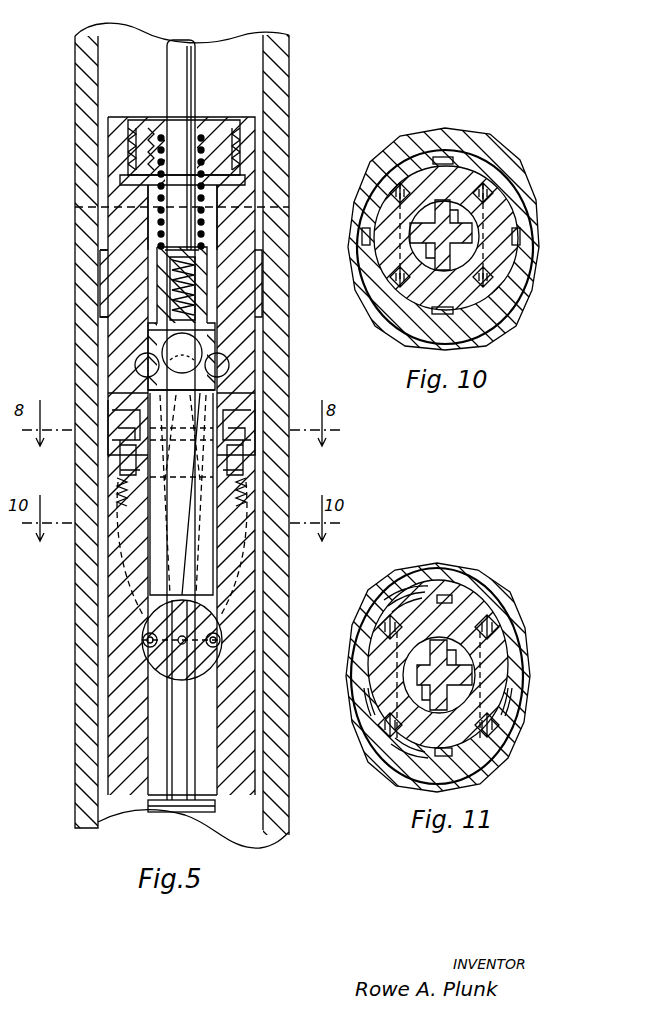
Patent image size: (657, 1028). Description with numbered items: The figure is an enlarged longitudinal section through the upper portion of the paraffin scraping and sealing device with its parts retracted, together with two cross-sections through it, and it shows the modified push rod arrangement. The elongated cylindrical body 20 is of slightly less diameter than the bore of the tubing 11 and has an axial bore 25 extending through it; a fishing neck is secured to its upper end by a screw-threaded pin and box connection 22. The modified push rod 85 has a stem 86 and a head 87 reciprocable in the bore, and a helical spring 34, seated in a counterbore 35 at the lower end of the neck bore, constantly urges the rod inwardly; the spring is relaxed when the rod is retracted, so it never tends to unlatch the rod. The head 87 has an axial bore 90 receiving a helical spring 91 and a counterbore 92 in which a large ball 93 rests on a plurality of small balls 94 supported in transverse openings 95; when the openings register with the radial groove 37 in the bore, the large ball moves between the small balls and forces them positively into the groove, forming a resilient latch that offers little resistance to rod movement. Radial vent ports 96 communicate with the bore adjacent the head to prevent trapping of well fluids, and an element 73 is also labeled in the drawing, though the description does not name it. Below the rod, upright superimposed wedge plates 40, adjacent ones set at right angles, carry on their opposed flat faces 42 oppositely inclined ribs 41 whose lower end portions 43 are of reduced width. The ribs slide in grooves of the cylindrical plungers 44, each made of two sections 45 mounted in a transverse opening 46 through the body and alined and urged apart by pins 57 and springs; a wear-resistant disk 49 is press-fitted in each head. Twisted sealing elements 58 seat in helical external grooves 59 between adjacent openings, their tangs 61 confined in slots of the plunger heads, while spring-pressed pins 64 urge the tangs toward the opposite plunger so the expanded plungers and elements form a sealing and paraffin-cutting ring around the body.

In FIG. 5, the tubing 11 is at (290, 62).
In FIG. 10, the tubing 11 is at (382, 150).
In FIG. 11, the tubing 11 is at (505, 755).
In FIG. 5, the body 20 is at (108, 722).
In FIG. 10, the body 20 is at (470, 175).
In FIG. 11, the body 20 is at (458, 617).
In FIG. 5, the screw-threaded pin and box connection 22 is at (228, 122).
In FIG. 5, the bore 25 is at (215, 220).
In FIG. 10, the bore 25 is at (418, 210).
In FIG. 11, the bore 25 is at (421, 648).
In FIG. 5, the helical spring 34 is at (205, 148).
In FIG. 5, the counterbore 35 is at (140, 145).
In FIG. 5, the radial groove 37 is at (228, 365).
In FIG. 5, the wedge plate 40 is at (207, 722).
In FIG. 10, the wedge plate 40 is at (473, 322).
In FIG. 11, the wedge plate 40 is at (412, 775).
In FIG. 5, the inclined rib 41 is at (192, 812).
In FIG. 5, the flat face 42 is at (150, 812).
In FIG. 5, the reduced-width lower end portion of rib 43 is at (147, 565).
In FIG. 5, the plunger 44 is at (255, 402).
In FIG. 10, the plunger 44 is at (460, 250).
In FIG. 11, the plunger 44 is at (508, 668).
In FIG. 5, the plunger section 45 is at (207, 650).
In FIG. 5, the transverse opening 46 is at (115, 398).
In FIG. 5, the disk 49 is at (112, 440).
In FIG. 5, the pin 57 is at (145, 640).
In FIG. 10, the sealing element 58 is at (480, 250).
In FIG. 11, the sealing element 58 is at (377, 735).
In FIG. 10, the external groove 59 is at (410, 273).
In FIG. 5, the tang 61 is at (243, 472).
In FIG. 5, the spring-pressed pin 64 is at (243, 452).
In FIG. 5, the sleeve 73 is at (102, 296).
In FIG. 10, the sleeve 73 is at (446, 157).
In FIG. 5, the push rod 85 is at (207, 252).
In FIG. 5, the stem 86 is at (167, 66).
In FIG. 5, the head 87 is at (157, 305).
In FIG. 5, the axial bore 90 is at (168, 269).
In FIG. 5, the helical spring 91 is at (192, 280).
In FIG. 5, the counterbore 92 is at (150, 340).
In FIG. 5, the ball 93 is at (192, 345).
In FIG. 5, the small balls 94 is at (137, 365).
In FIG. 5, the transverse opening 95 is at (215, 393).
In FIG. 5, the radial vent port 96 is at (75, 210).